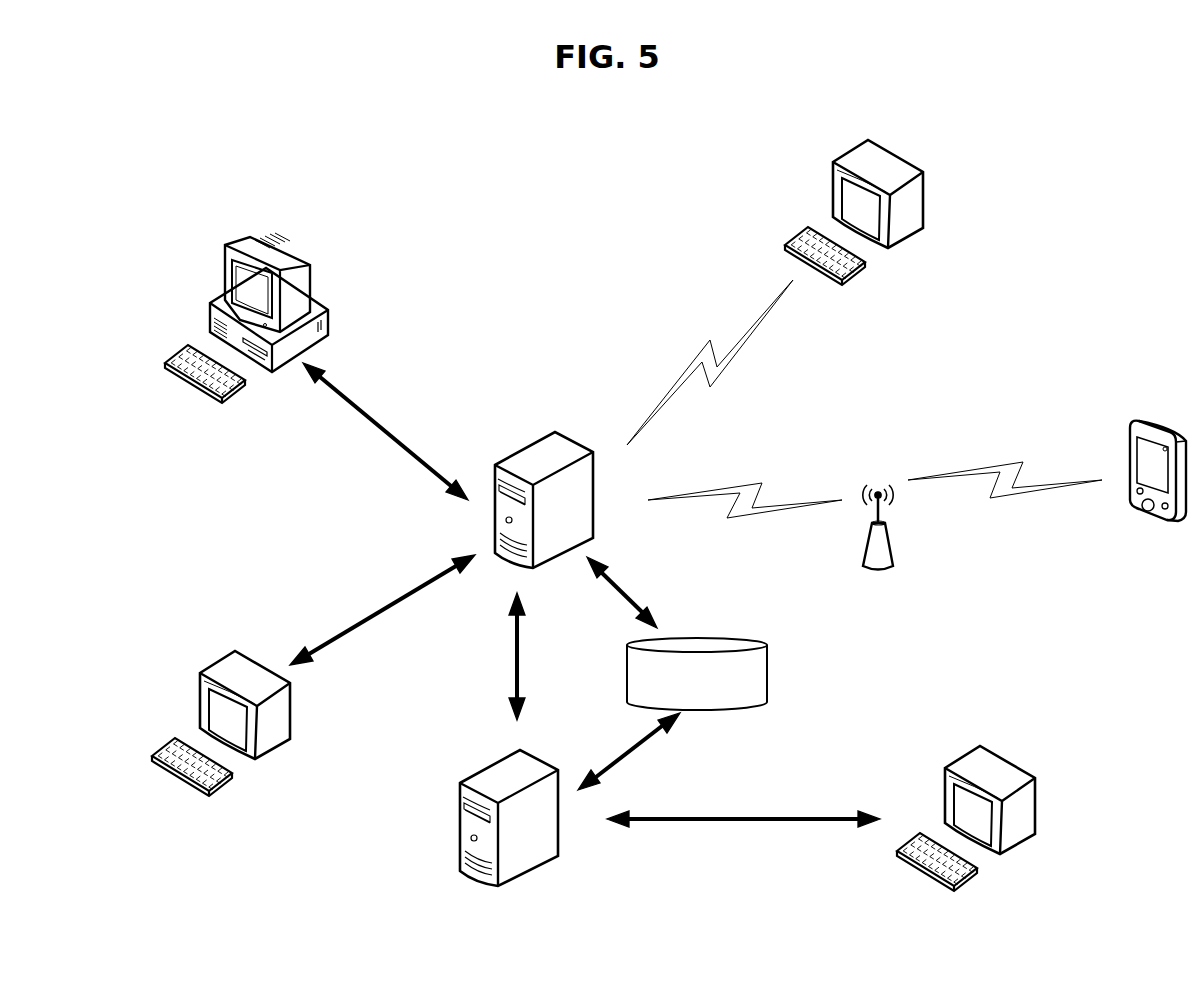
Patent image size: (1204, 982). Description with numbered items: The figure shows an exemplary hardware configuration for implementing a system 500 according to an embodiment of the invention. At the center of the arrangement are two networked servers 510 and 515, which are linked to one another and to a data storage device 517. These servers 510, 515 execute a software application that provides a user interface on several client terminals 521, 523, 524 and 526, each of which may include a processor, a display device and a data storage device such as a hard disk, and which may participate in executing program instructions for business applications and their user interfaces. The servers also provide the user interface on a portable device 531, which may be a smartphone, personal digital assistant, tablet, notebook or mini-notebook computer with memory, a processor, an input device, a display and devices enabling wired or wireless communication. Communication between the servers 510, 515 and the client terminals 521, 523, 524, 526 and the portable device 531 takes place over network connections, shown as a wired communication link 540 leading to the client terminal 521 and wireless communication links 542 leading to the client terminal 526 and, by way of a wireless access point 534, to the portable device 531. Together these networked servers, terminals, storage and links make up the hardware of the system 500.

The system 500 is at (607, 94).
The networked server 510 is at (544, 500).
The networked server 515 is at (509, 818).
The data storage device 517 is at (697, 674).
The client terminal 521 is at (246, 308).
The client terminal 523 is at (221, 705).
The client terminal 524 is at (966, 800).
The client terminal 526 is at (854, 193).
The portable device 531 is at (1130, 457).
The wireless access point 534 is at (901, 527).
The wired communication link 540 is at (355, 402).
The wireless communication link 542 is at (710, 362).